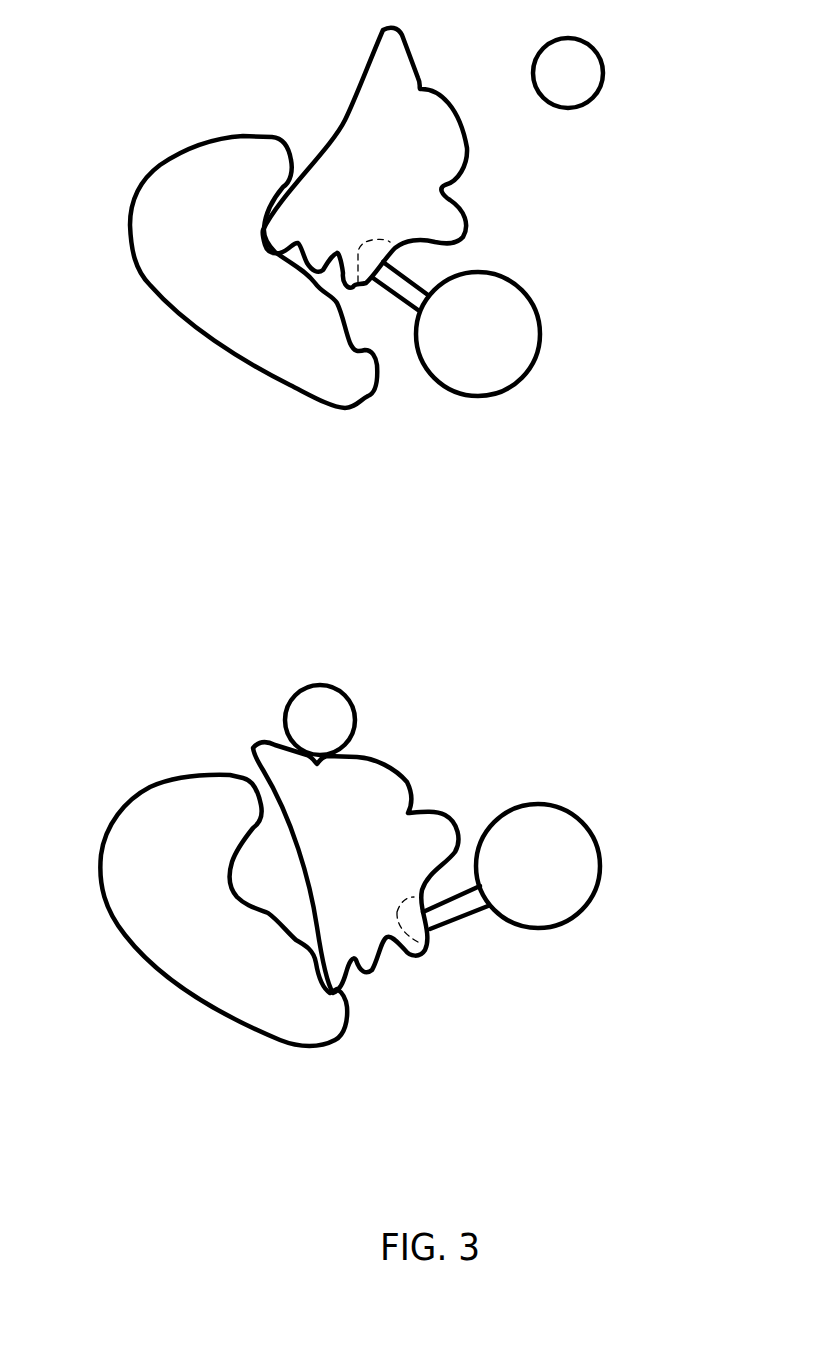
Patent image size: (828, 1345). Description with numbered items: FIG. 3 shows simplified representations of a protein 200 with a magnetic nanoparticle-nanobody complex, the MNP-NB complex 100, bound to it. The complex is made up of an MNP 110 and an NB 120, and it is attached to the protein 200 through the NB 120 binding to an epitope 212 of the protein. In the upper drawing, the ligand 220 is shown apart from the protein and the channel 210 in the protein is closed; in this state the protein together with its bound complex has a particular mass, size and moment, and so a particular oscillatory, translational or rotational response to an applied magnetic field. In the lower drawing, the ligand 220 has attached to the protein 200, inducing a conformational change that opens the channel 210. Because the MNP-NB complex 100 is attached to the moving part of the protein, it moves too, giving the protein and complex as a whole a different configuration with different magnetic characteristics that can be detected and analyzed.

The MNP-NB complex 100 is at (535, 618).
The MNP 110 is at (542, 330).
The NB 120 is at (407, 273).
The protein 200 is at (166, 158).
The channel 210 is at (291, 258).
The epitope 212 is at (358, 238).
The ligand 220 is at (568, 109).